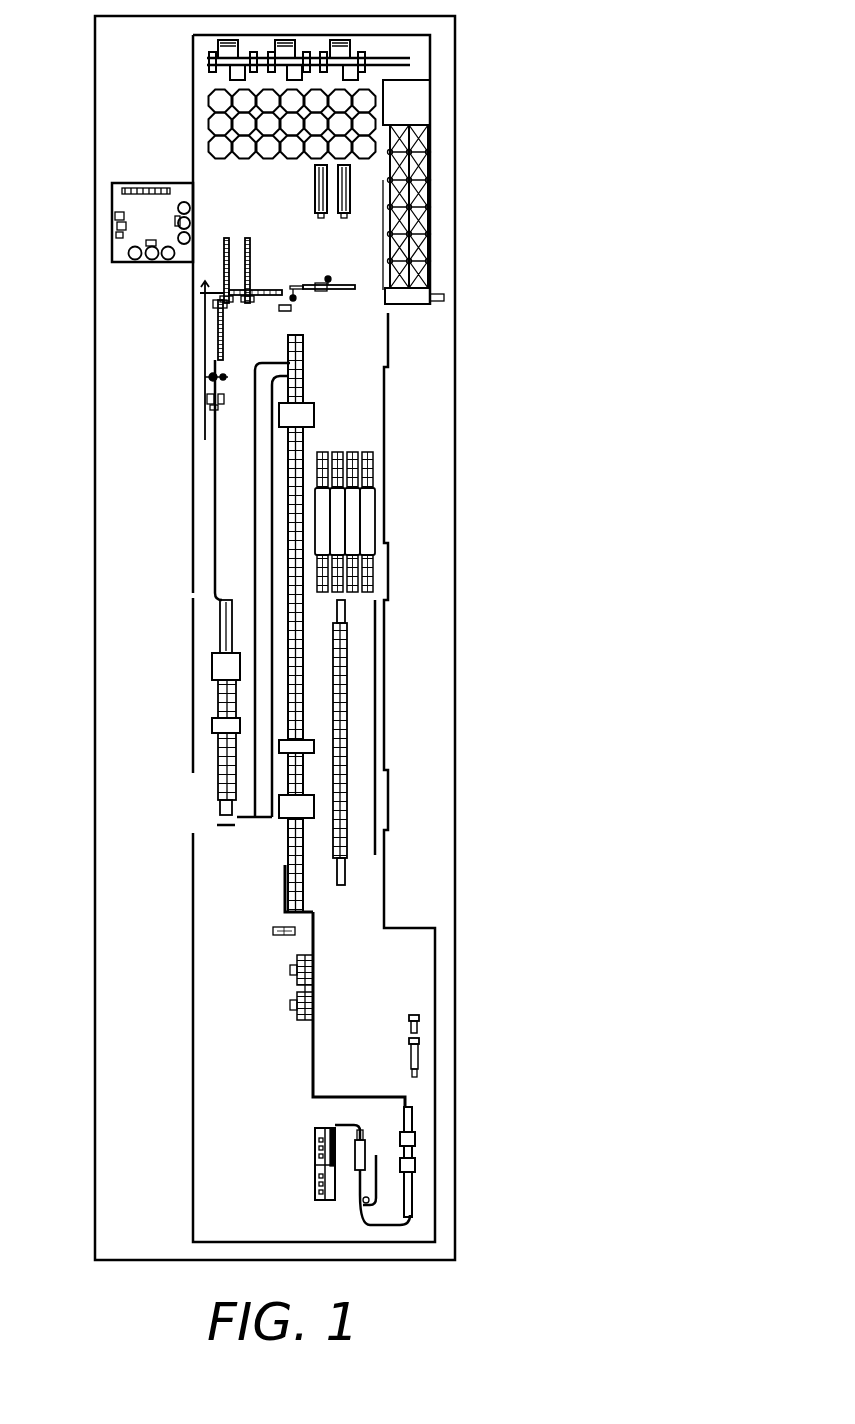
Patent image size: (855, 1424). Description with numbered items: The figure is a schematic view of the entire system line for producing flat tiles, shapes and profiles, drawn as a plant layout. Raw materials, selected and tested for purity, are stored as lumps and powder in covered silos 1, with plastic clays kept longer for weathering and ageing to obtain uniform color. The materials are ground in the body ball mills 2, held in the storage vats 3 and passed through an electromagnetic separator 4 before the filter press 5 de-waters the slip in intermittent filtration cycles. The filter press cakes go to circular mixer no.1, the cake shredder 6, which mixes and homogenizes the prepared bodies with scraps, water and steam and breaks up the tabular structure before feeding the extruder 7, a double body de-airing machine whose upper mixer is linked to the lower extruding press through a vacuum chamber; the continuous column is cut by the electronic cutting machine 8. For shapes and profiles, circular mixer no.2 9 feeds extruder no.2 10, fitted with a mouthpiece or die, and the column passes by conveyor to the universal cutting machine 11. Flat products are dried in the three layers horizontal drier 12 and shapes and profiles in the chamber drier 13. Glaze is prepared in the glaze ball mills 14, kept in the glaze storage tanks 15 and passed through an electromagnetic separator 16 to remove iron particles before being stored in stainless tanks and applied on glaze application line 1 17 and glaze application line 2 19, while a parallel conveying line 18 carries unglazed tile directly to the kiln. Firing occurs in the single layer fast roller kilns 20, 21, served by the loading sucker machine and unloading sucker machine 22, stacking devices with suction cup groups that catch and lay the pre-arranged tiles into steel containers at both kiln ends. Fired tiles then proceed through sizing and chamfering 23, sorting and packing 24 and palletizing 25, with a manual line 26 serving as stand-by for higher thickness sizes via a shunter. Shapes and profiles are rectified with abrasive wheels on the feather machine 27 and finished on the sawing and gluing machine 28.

The covered silos 1 is at (420, 188).
The body ball mills 2 is at (415, 52).
The storage vats 3 is at (218, 98).
The electromagnetic separator 4 is at (300, 152).
The filter press 5 is at (318, 200).
The circular mixer no.1 (cake shredder) 6 is at (220, 310).
The extruder 7 is at (213, 380).
The electronic cutting machine 8 is at (210, 408).
The circular mixer no.2 9 is at (250, 288).
The extruder no.2 10 is at (318, 285).
The universal cutting machine 11 is at (330, 295).
The three layers horizontal drier 12 is at (222, 702).
The chamber drier 13 is at (365, 505).
The glaze ball mills 14 is at (112, 196).
The glaze storage tanks 15 is at (185, 200).
The electromagnetic separator 16 is at (128, 250).
The glaze application line 1 17 is at (250, 580).
The parallel conveying line 18 is at (270, 548).
The glaze application line 2 19 is at (376, 642).
The single layer fast roller kiln 20 is at (296, 512).
The single layer fast roller kiln 21 is at (344, 712).
The loading sucker machine and unloading sucker machine 22 is at (296, 980).
The sizing and chamfering 23 is at (412, 1140).
The sorting and packing 24 is at (360, 1175).
The palletizing 25 is at (320, 1150).
The manual line 26 is at (378, 1195).
The feather machine 27 is at (420, 1020).
The sawing and gluing machine 28 is at (420, 1060).